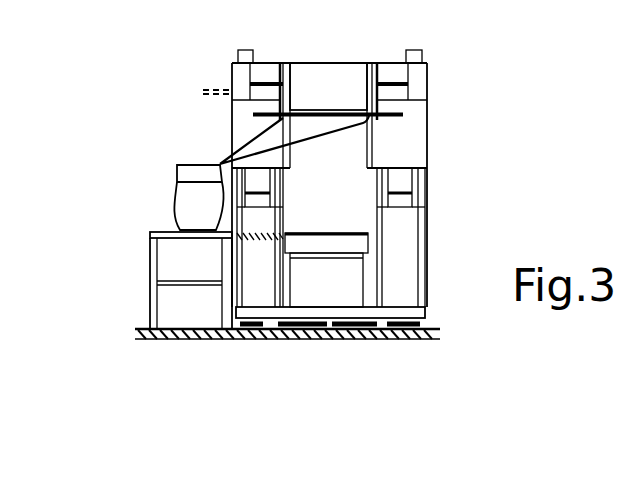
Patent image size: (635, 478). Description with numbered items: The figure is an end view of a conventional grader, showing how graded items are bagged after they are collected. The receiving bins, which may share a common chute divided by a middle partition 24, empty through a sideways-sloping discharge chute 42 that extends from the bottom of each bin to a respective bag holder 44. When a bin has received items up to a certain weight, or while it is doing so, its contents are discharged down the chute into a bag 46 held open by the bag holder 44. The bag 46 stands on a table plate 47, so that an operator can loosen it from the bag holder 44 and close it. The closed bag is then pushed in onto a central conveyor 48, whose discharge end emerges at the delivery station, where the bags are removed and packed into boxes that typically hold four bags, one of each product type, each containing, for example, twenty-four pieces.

The middle partition 24 is at (343, 88).
The sideways-sloping discharge chute 42 is at (297, 133).
The bag holder 44 is at (197, 175).
The bag 46 is at (192, 213).
The table plate 47 is at (160, 232).
The central conveyor 48 is at (302, 232).